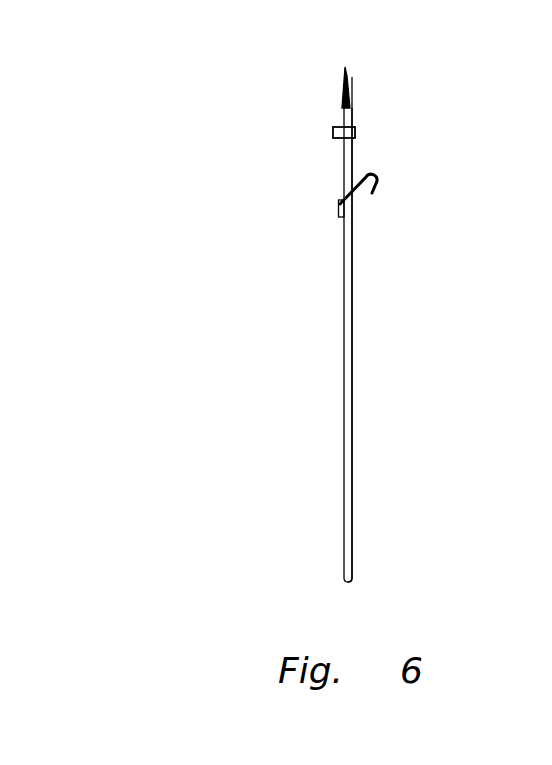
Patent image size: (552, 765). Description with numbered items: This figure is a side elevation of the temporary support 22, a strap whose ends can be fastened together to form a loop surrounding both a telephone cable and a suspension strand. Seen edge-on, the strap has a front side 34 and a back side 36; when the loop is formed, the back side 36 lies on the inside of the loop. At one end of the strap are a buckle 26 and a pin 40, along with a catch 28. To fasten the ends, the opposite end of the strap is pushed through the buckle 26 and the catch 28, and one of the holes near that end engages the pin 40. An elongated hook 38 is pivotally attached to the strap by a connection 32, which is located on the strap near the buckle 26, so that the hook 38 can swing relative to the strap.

The temporary support 22 is at (390, 303).
The buckle 26 is at (352, 82).
The catch 28 is at (333, 132).
The connection 32 is at (338, 208).
The front side 34 is at (343, 388).
The back side 36 is at (353, 405).
The elongated hook 38 is at (380, 182).
The pin 40 is at (345, 68).